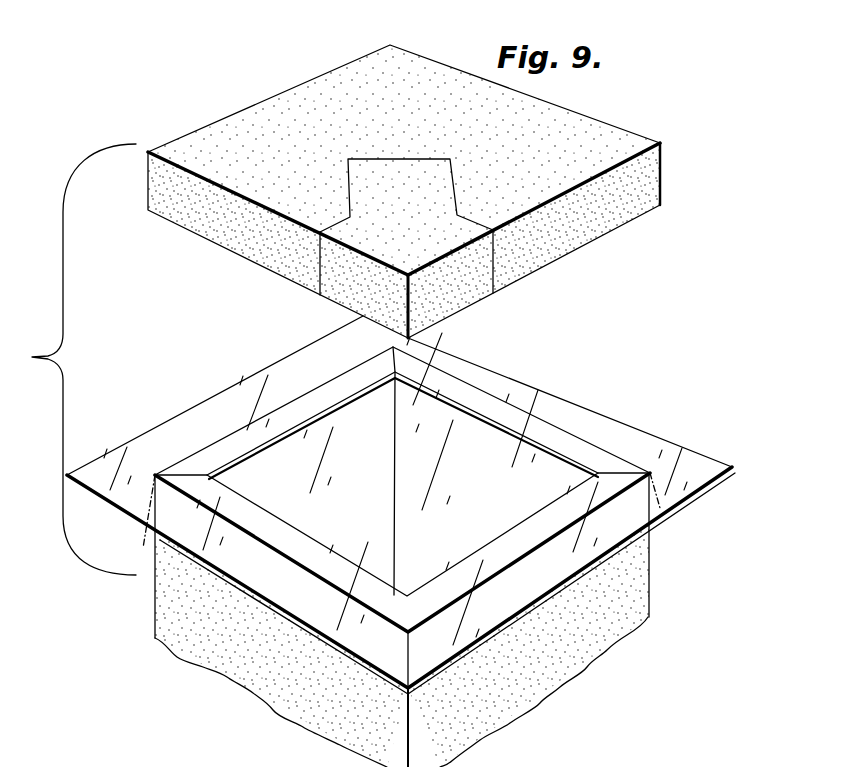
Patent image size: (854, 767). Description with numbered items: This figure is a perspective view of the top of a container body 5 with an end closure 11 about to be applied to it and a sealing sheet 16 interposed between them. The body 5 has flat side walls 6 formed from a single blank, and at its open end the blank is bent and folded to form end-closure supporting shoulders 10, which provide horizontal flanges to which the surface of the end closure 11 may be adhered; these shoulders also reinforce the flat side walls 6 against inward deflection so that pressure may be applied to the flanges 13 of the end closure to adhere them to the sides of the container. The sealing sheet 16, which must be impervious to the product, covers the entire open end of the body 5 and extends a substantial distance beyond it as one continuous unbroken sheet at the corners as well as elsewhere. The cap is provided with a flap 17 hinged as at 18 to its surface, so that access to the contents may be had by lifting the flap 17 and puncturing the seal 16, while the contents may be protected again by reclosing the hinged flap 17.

The body of a container 5 is at (535, 694).
The side walls 6 is at (235, 653).
The end-closure supporting shoulders 10 is at (508, 553).
The end closure 11 is at (618, 144).
The flange 13 is at (265, 251).
The sealing sheet 16 is at (696, 447).
The flap 17 is at (350, 276).
The hinge 18 is at (370, 157).